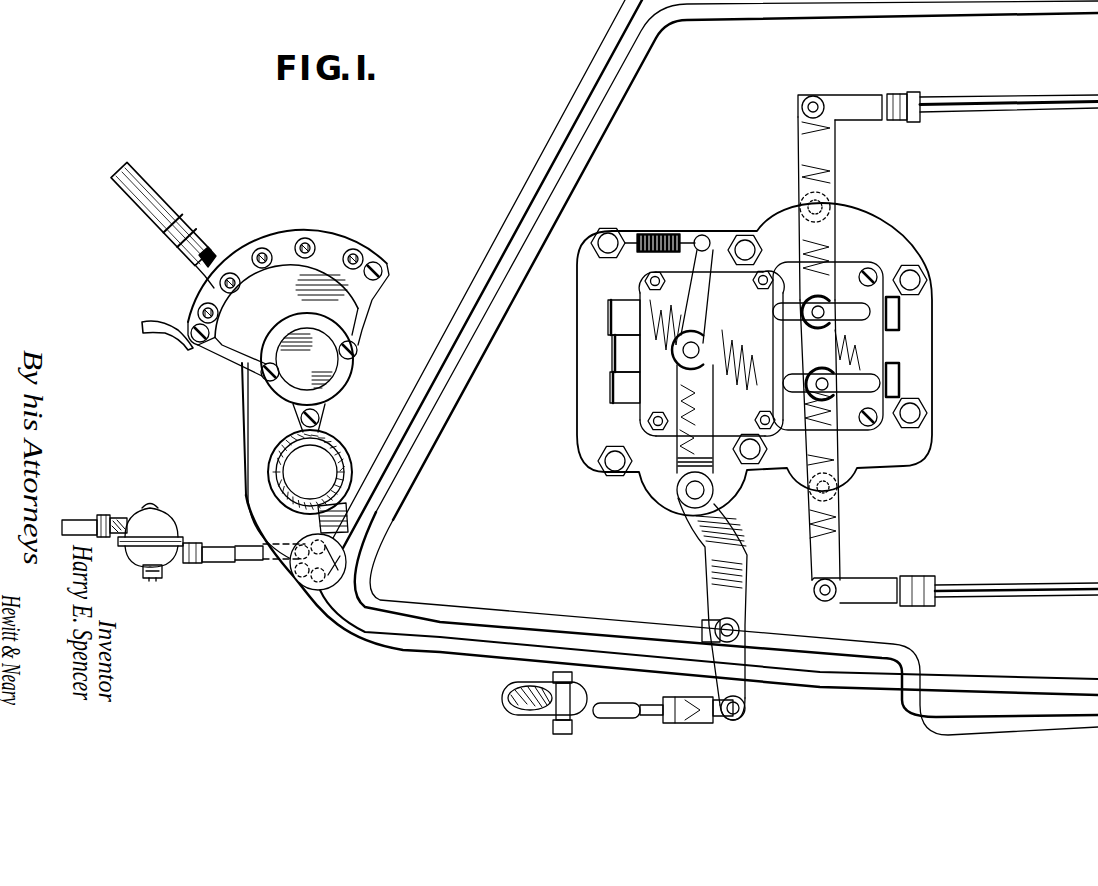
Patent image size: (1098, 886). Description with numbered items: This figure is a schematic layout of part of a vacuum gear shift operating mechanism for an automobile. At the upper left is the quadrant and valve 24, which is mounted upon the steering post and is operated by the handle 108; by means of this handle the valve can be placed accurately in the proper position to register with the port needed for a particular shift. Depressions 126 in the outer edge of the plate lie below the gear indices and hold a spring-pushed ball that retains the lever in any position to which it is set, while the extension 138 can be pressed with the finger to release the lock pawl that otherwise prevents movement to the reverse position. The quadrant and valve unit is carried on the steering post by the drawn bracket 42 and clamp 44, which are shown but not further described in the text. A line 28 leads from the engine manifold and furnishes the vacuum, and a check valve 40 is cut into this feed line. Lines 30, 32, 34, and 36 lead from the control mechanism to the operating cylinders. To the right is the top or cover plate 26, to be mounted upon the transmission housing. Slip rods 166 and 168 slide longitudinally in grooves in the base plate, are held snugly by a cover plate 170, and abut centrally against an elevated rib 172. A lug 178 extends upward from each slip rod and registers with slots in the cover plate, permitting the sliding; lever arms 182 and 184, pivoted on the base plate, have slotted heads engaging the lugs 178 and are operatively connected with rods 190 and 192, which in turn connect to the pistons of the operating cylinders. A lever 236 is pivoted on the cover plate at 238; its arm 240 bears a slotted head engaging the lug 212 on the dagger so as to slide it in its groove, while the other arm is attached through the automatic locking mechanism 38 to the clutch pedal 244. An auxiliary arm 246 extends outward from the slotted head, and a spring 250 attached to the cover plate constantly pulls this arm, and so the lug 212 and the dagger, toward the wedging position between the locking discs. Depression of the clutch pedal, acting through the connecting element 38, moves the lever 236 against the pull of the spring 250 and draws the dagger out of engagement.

The quadrant and valve 24 is at (290, 331).
The top or cover plate 26 is at (925, 316).
The line 28 is at (82, 521).
The line 30 is at (578, 103).
The line 32 is at (592, 141).
The line 34 is at (512, 614).
The line 36 is at (398, 644).
The automatic locking mechanism 38 is at (651, 706).
The check valve 40 is at (166, 522).
The bracket 42 is at (252, 426).
The clamp 44 is at (341, 444).
The handle 108 is at (160, 212).
The depressions 126 is at (306, 232).
The extension 138 is at (160, 330).
The slip rod 166 is at (620, 405).
The slip rod 168 is at (610, 323).
The cover plate 170 is at (878, 325).
The elevated rib 172 is at (612, 361).
The lug 178 is at (830, 312).
The lever arm 182 is at (838, 536).
The lever arm 184 is at (828, 240).
The rod 190 is at (992, 108).
The rod 192 is at (1022, 587).
The lug 212 is at (700, 349).
The lever 236 is at (712, 553).
The pivot 238 is at (690, 493).
The arm 240 is at (655, 440).
The clutch pedal 244 is at (505, 700).
The auxiliary arm 246 is at (708, 308).
The spring 250 is at (663, 236).